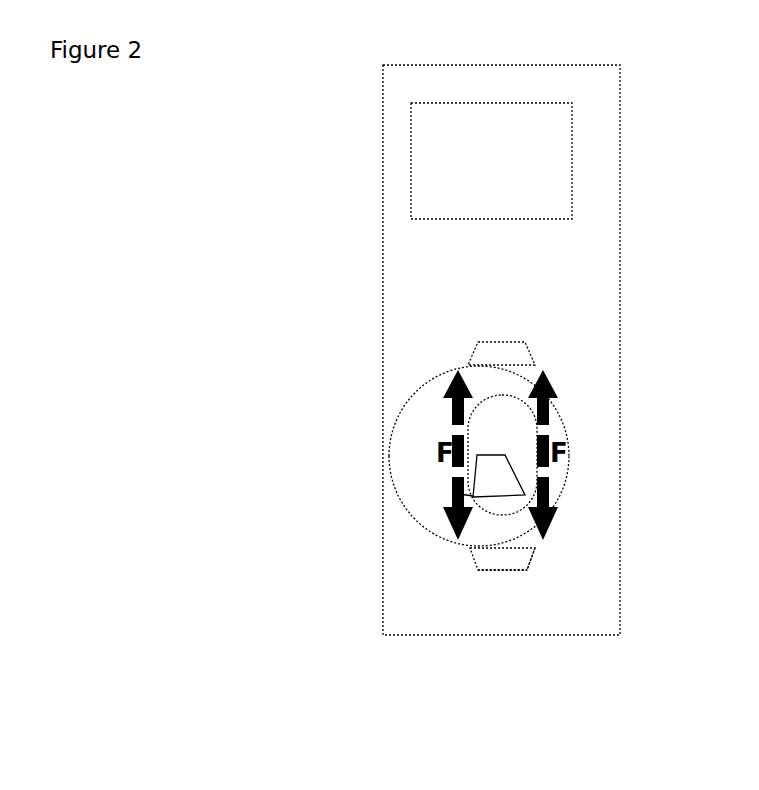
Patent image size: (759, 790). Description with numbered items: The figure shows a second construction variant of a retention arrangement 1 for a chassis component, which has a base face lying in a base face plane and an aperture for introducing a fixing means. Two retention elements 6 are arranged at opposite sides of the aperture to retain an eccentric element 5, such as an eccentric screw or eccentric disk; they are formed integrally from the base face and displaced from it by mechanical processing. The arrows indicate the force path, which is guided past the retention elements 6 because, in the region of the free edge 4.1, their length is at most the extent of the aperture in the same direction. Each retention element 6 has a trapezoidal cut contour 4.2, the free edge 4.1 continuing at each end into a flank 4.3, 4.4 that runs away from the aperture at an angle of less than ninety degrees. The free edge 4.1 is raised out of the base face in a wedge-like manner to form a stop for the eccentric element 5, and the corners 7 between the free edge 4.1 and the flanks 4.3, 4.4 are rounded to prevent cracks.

The retention arrangement 1 is at (680, 218).
The free edge 4.1 is at (510, 372).
The trapezoidal cut contour 4.2 is at (477, 347).
The flank 4.3 is at (470, 563).
The flank 4.4 is at (530, 563).
The eccentric element 5 is at (555, 485).
The retention element 6 is at (498, 562).
The corner 7 is at (537, 542).